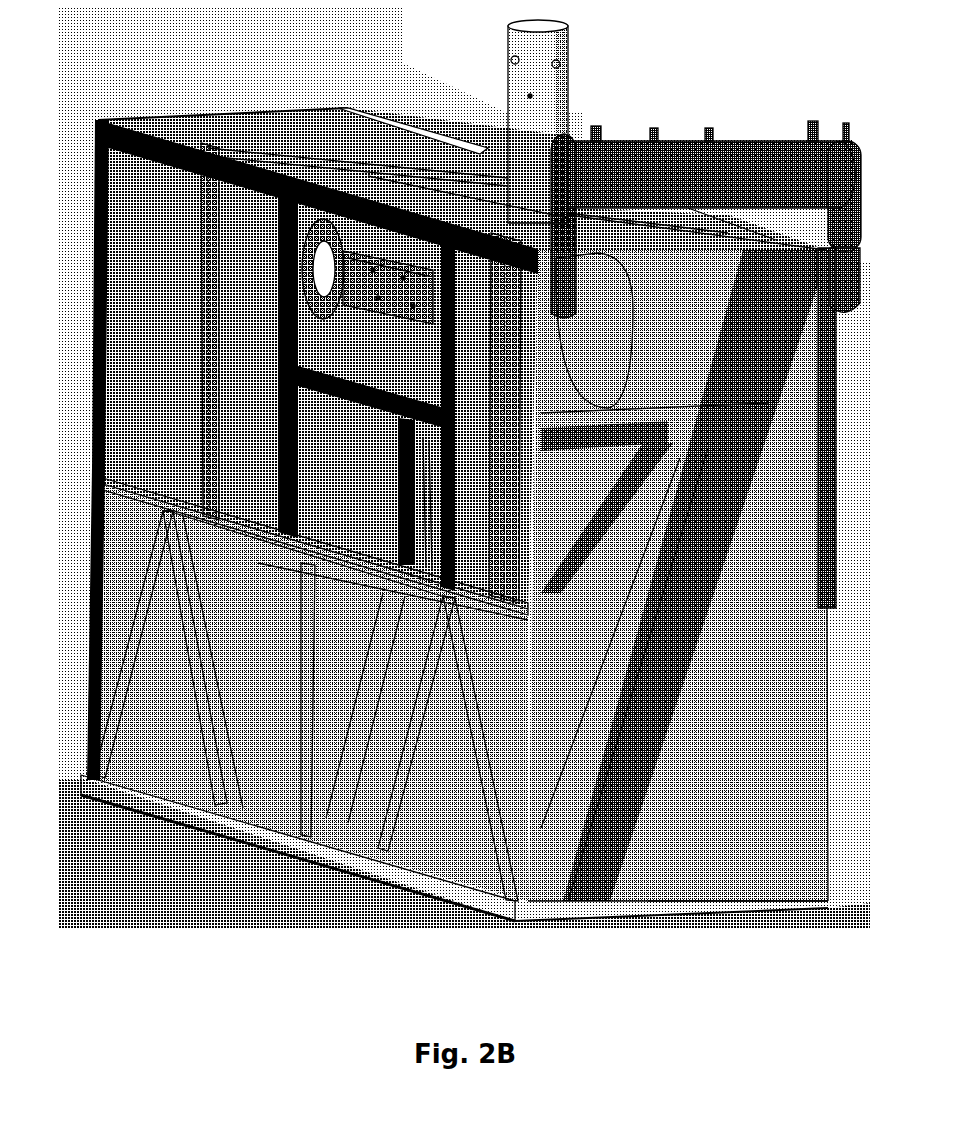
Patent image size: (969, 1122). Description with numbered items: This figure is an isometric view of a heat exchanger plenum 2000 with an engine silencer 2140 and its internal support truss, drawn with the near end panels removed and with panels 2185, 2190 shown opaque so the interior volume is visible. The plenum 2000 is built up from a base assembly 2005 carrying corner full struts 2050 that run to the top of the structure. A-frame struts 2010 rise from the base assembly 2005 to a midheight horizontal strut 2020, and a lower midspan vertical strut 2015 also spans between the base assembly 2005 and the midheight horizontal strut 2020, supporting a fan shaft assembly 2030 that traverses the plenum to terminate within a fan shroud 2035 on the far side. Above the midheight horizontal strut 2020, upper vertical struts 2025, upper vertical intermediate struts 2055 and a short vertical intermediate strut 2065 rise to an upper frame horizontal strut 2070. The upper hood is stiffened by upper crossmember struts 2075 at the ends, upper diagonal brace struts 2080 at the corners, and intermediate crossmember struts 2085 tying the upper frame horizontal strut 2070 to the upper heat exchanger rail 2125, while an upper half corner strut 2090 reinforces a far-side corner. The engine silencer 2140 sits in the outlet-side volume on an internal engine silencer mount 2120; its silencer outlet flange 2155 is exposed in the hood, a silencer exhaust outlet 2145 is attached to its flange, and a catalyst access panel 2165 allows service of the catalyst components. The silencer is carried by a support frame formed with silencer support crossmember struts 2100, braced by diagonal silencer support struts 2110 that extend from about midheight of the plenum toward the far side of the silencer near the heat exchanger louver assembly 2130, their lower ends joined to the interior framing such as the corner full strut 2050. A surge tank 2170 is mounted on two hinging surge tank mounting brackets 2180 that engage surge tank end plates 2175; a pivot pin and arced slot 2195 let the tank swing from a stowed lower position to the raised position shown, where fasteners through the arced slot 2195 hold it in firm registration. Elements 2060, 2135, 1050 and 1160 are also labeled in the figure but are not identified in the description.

The heat exchanger plenum 2000 is at (158, 847).
The base assembly 2005 is at (360, 860).
The A-frame struts 2010 is at (100, 727).
The lower midspan vertical strut 2015 is at (332, 662).
The midheight horizontal strut 2020 is at (400, 578).
The upper vertical struts 2025 is at (194, 377).
The fan shaft assembly 2030 is at (254, 530).
The fan shroud 2035 is at (755, 777).
The corner full struts 2050 is at (82, 647).
The upper vertical intermediate struts 2055 is at (447, 340).
The cross member 2060 is at (358, 403).
The short vertical intermediate strut 2065 is at (390, 477).
The upper frame horizontal strut 2070 is at (172, 150).
The upper crossmember struts 2075 is at (268, 112).
The upper diagonal brace struts 2080 is at (250, 112).
The intermediate crossmember struts 2085 is at (332, 165).
The upper half corner struts 2090 is at (828, 497).
The silencer support crossmember struts 2100 is at (587, 443).
The diagonal silencer support struts 2110 is at (576, 580).
The internal engine silencer mount 2120 is at (667, 710).
The upper heat exchanger rail 2125 is at (370, 122).
The heat exchanger louver assembly 2130 is at (684, 364).
The shelf 2135 is at (612, 396).
The engine silencer 2140 is at (620, 312).
The silencer exhaust outlet 2145 is at (545, 108).
The silencer outlet flange 2155 is at (478, 212).
The catalyst access panel 2165 is at (390, 305).
The surge tank 2170 is at (705, 147).
The surge tank end plates 2175 is at (540, 185).
The surge tank mounting brackets 2180 is at (852, 280).
The panel 2185 is at (160, 263).
The panel 2190 is at (275, 327).
The arced slot 2195 is at (830, 300).
The cross brace 1050 is at (425, 700).
The viewport 1160 is at (294, 255).